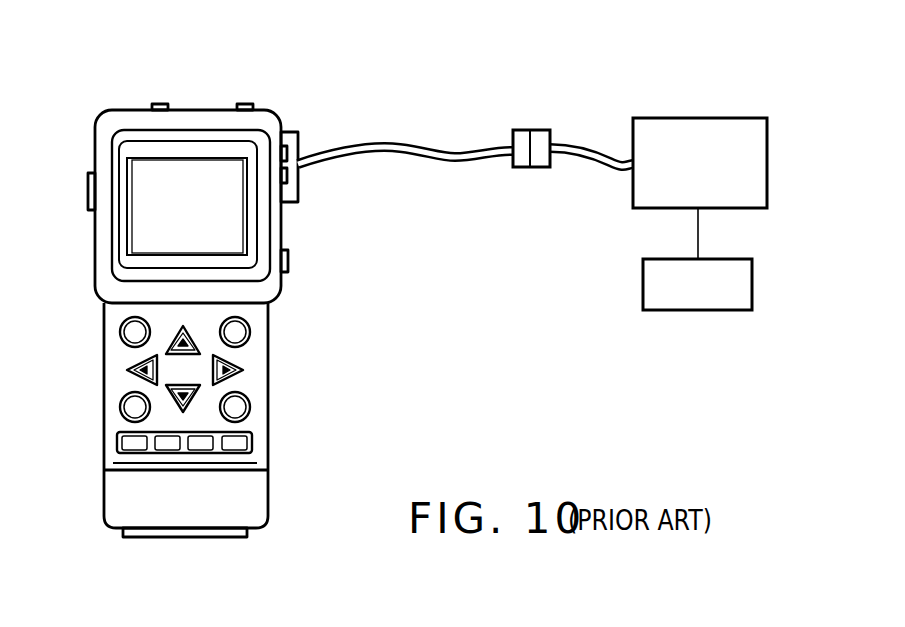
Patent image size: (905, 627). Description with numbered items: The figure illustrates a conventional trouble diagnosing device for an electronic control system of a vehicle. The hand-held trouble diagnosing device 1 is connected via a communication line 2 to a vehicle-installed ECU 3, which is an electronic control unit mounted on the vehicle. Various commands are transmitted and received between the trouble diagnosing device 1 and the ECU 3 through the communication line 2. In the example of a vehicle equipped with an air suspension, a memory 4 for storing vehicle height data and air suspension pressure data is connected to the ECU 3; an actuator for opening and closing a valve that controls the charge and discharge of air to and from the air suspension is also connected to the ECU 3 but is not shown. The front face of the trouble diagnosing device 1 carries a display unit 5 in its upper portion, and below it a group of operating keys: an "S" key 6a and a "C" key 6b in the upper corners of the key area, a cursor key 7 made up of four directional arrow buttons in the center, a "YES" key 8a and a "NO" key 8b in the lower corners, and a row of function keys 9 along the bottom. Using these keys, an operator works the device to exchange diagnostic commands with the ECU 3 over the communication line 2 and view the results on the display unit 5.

The trouble diagnosing device 1 is at (201, 95).
The communication line 2 is at (448, 152).
The vehicle-installed ECU 3 is at (767, 164).
The memory 4 is at (752, 285).
The display unit 5 is at (142, 232).
The "S" key 6a is at (119, 331).
The "C" key 6b is at (250, 332).
The cursor key 7 is at (120, 375).
The "YES" key 8a is at (250, 407).
The "NO" key 8b is at (119, 411).
The function keys 9 is at (253, 447).